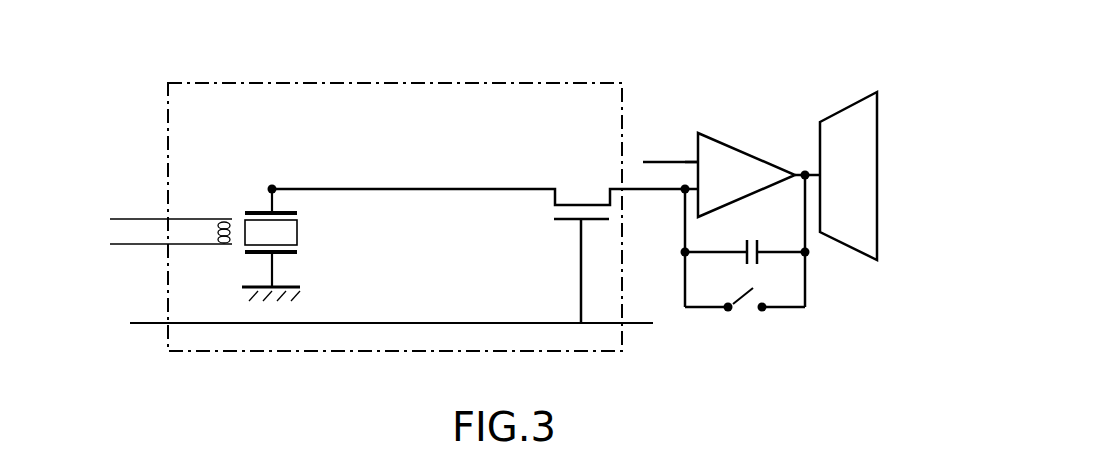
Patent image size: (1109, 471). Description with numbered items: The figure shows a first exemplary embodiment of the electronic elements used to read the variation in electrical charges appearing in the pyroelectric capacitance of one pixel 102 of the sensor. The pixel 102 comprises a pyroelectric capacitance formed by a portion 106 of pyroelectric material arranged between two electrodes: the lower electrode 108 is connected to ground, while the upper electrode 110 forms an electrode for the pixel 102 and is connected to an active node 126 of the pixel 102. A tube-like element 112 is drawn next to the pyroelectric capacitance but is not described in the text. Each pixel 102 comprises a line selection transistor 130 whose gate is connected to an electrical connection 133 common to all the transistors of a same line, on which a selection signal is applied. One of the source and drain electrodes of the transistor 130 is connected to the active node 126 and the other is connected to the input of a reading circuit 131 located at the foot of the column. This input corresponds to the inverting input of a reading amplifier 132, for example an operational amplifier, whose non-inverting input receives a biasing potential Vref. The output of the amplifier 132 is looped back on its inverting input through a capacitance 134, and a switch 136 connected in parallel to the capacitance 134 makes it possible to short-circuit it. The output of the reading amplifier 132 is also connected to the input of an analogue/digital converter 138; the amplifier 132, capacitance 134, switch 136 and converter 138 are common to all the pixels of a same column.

The pixel 102 is at (513, 83).
The portion of pyroelectric material 106 is at (285, 226).
The lower electrode 108 is at (255, 255).
The upper electrode 110 is at (265, 212).
The fluid conduit with coil 112 is at (220, 236).
The active node 126 is at (274, 188).
The line selection transistor 130 is at (584, 190).
The reading circuit 131 is at (748, 66).
The reading amplifier 132 is at (745, 170).
The electrical connection 133 is at (503, 322).
The capacitance 134 is at (762, 258).
The switch 136 is at (765, 310).
The analogue/digital converter 138 is at (855, 175).